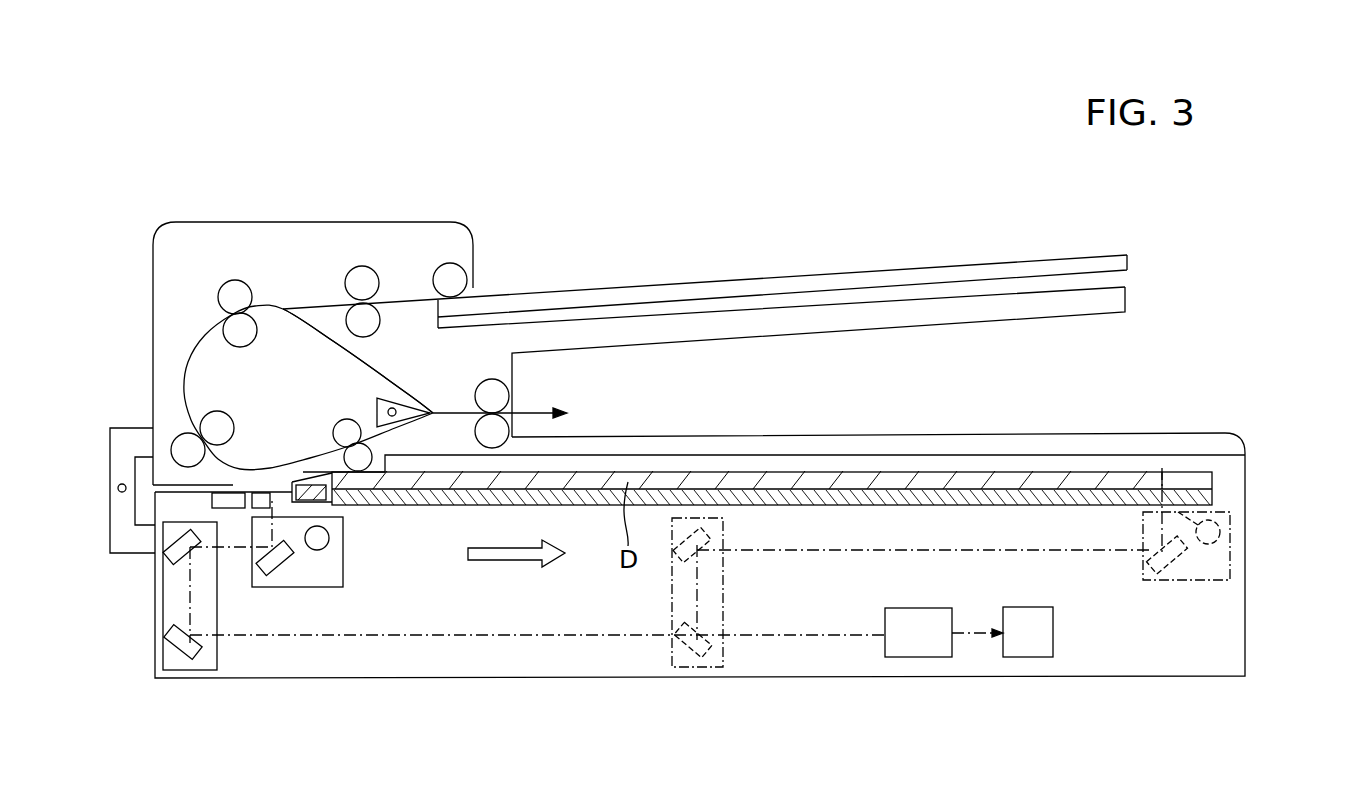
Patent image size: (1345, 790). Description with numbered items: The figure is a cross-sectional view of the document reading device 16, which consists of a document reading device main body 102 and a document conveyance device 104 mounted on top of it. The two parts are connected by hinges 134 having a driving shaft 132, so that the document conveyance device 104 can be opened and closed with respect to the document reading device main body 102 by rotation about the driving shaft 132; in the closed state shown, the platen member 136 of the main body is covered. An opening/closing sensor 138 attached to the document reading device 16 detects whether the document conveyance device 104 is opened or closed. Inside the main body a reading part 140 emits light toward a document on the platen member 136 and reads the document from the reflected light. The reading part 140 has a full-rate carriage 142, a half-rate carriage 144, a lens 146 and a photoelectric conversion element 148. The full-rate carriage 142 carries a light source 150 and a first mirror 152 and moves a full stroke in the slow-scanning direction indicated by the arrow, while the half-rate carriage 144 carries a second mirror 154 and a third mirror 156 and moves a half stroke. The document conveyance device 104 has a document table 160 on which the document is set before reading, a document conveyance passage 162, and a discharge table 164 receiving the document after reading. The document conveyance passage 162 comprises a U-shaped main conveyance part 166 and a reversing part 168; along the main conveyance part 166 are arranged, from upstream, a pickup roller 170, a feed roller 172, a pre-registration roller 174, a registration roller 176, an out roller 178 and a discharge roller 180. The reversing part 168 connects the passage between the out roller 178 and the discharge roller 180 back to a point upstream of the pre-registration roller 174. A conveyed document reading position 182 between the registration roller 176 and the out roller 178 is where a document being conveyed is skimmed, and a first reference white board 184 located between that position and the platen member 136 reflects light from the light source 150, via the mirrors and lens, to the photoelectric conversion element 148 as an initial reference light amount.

The document reading device 16 is at (855, 176).
The document reading device main body 102 is at (1256, 543).
The document conveyance device 104 is at (310, 216).
The driving shaft 132 is at (118, 488).
The hinge 134 is at (112, 554).
The platen member 136 is at (850, 506).
The opening/closing sensor 138 is at (1237, 483).
The reading part 140 is at (155, 612).
The full-rate carriage 142 is at (352, 577).
The half-rate carriage 144 is at (228, 657).
The lens 146 is at (908, 608).
The photoelectric conversion element 148 is at (1028, 607).
The light source 150 is at (330, 539).
The first mirror 152 is at (283, 566).
The second mirror 154 is at (170, 541).
The third mirror 156 is at (177, 661).
The document table 160 is at (1133, 292).
The document conveyance passage 162 is at (205, 322).
The discharge table 164 is at (948, 432).
The main conveyance part 166 is at (185, 370).
The reversing part 168 is at (378, 373).
The pickup roller 170 is at (450, 263).
The feed roller 172 is at (375, 253).
The pre-registration roller 174 is at (237, 280).
The registration roller 176 is at (192, 463).
The out roller 178 is at (334, 427).
The discharge roller 180 is at (492, 379).
The conveyed document reading position 182 is at (264, 476).
The first reference white board 184 is at (377, 404).